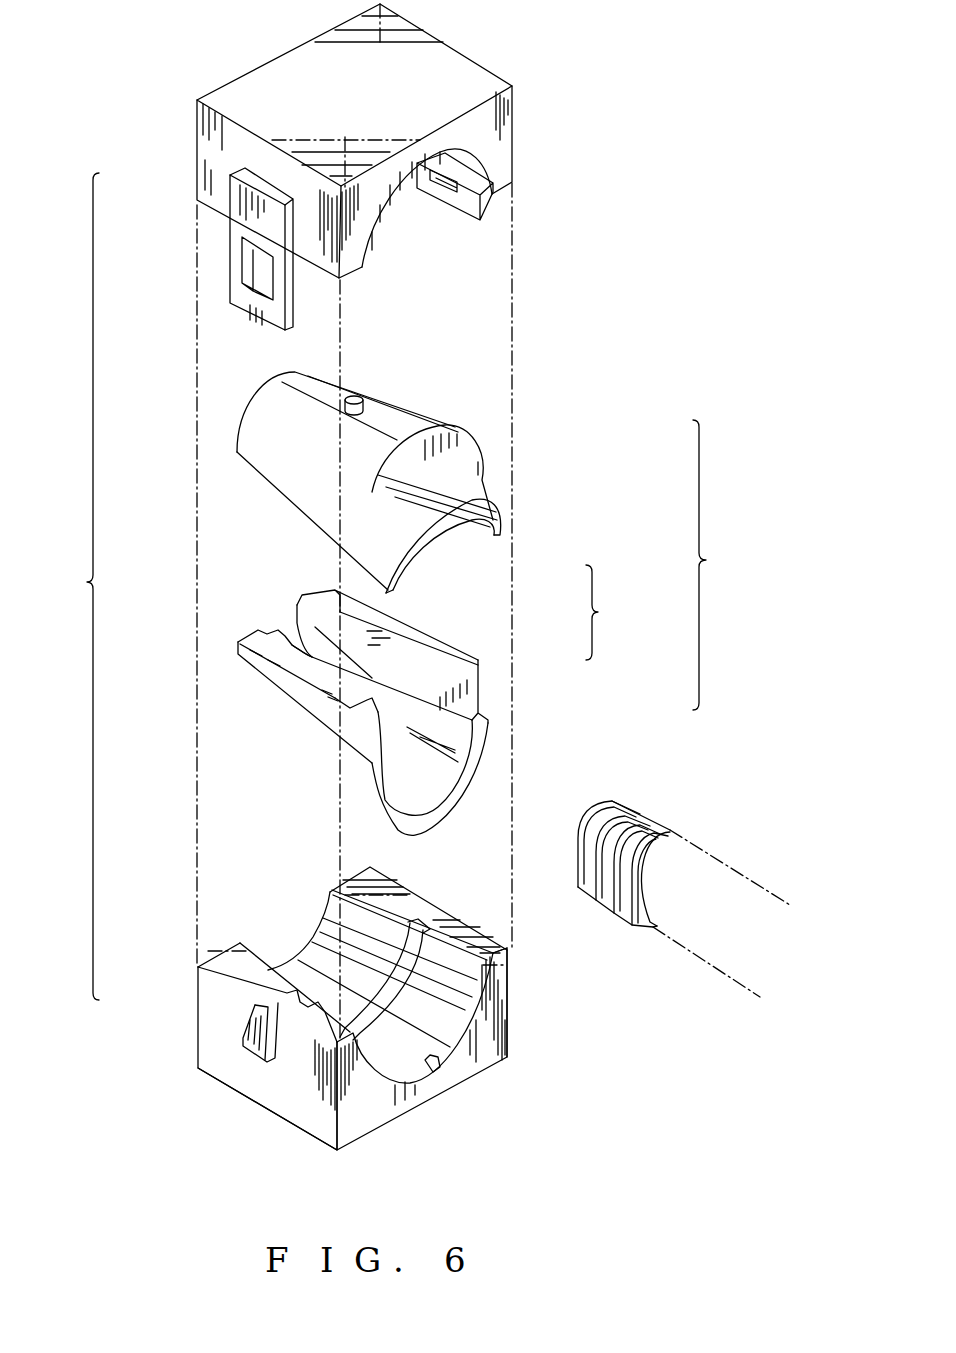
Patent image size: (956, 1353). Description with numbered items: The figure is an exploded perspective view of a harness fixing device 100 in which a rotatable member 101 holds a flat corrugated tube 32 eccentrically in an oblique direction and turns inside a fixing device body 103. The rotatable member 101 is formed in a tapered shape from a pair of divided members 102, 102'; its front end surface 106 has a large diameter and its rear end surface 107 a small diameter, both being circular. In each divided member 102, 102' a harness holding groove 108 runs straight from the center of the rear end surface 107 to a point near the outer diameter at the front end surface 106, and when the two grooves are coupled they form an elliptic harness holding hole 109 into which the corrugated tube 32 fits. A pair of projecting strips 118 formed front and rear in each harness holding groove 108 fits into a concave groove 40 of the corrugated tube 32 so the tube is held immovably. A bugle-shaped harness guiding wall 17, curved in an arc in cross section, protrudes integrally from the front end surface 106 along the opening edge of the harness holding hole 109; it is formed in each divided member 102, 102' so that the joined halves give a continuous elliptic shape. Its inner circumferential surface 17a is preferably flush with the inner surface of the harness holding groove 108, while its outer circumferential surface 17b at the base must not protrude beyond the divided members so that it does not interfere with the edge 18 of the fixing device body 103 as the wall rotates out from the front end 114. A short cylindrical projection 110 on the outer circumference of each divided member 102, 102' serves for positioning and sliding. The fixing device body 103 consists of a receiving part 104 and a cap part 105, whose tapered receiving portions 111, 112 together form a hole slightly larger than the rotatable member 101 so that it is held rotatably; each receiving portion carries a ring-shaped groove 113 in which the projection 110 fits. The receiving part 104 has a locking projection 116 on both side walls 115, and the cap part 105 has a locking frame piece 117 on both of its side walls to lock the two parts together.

The harness fixing device 100 is at (530, 278).
The rotatable member 101 is at (725, 565).
The divided member 102 is at (463, 457).
The divided member 102' is at (453, 654).
The fixing device body 103 is at (59, 586).
The receiving part 104 is at (362, 1030).
The cap part 105 is at (304, 192).
The front end surface 106 is at (478, 707).
The rear end surface 107 is at (308, 600).
The harness holding groove 108 is at (480, 563).
The harness holding hole 109 is at (622, 612).
The short cylindrical projection 110 is at (360, 395).
The receiving portion 111 is at (244, 889).
The receiving portion 112 is at (403, 198).
The groove 113 is at (432, 927).
The front end 114 is at (500, 1030).
The side wall 115 is at (267, 1087).
The locking projection 116 is at (257, 1050).
The locking frame piece 117 is at (248, 308).
The projecting strip 118 is at (308, 687).
The harness guiding wall 17 is at (410, 680).
The inner circumferential surface 17a is at (425, 780).
The outer circumferential surface 17b is at (357, 753).
The edge 18 is at (472, 160).
The corrugated tube 32 is at (748, 872).
The concave groove 40 is at (627, 812).